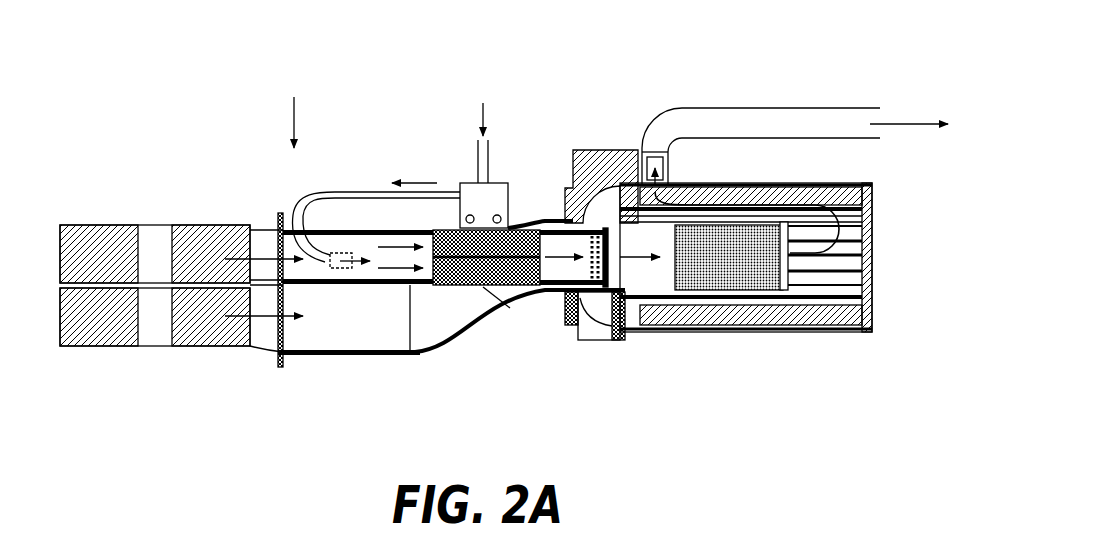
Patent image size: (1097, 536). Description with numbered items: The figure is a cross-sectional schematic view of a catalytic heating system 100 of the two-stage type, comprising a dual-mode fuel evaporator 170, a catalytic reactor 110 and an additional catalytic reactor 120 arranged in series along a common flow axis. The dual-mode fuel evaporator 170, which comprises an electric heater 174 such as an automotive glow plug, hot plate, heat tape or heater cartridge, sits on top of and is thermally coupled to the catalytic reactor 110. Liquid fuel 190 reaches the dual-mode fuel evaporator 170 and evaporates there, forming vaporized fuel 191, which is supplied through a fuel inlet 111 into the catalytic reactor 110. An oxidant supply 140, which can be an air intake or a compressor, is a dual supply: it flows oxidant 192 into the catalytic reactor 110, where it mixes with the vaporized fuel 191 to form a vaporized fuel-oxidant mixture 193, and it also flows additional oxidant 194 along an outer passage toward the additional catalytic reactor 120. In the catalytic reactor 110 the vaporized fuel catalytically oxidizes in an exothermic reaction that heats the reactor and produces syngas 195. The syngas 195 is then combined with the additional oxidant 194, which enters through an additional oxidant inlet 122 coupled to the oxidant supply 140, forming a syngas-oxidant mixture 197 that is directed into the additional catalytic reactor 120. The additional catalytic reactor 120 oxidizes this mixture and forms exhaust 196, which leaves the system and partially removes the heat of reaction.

The catalytic heating system 100 is at (842, 82).
The catalytic reactor 110 is at (452, 283).
The fuel inlet 111 is at (338, 253).
The additional catalytic reactor 120 is at (715, 330).
The additional oxidant inlet 122 is at (493, 330).
The oxidant supply 140 is at (126, 220).
The dual-mode fuel evaporator 170 is at (475, 183).
The electric heater 174 is at (467, 214).
The liquid fuel 190 is at (362, 198).
The vaporized fuel 191 is at (418, 188).
The oxidant 192 is at (270, 258).
The vaporized fuel-oxidant mixture 193 is at (403, 287).
The additional oxidant 194 is at (263, 325).
The syngas 195 is at (563, 252).
The exhaust 196 is at (795, 138).
The syngas-oxidant mixture 197 is at (623, 343).